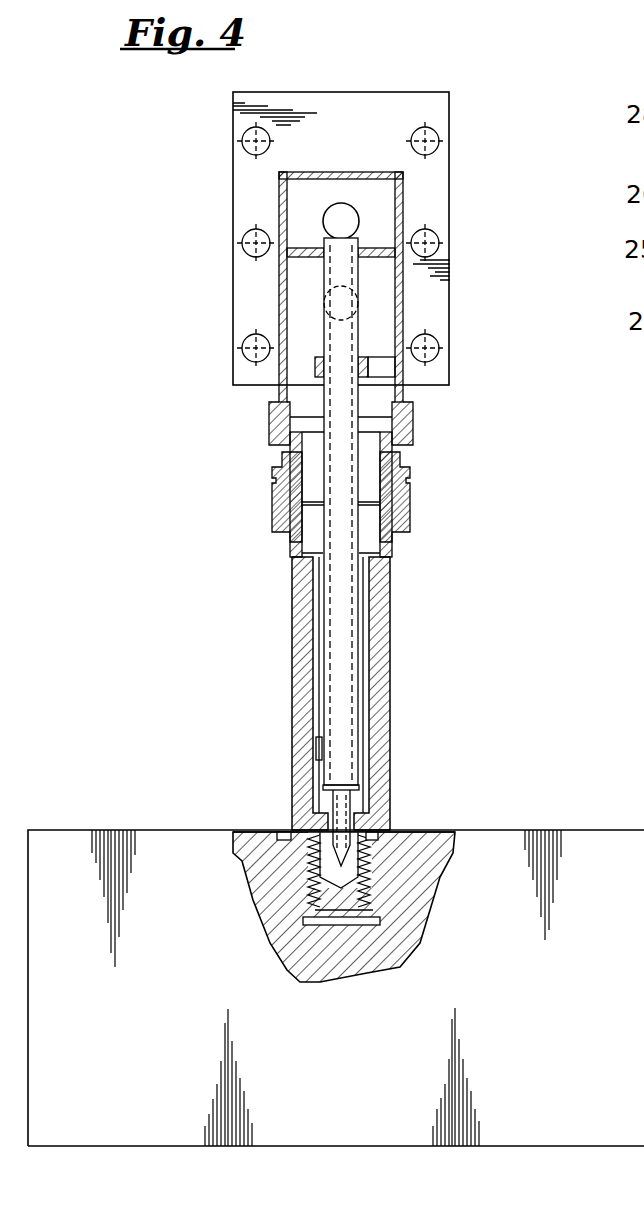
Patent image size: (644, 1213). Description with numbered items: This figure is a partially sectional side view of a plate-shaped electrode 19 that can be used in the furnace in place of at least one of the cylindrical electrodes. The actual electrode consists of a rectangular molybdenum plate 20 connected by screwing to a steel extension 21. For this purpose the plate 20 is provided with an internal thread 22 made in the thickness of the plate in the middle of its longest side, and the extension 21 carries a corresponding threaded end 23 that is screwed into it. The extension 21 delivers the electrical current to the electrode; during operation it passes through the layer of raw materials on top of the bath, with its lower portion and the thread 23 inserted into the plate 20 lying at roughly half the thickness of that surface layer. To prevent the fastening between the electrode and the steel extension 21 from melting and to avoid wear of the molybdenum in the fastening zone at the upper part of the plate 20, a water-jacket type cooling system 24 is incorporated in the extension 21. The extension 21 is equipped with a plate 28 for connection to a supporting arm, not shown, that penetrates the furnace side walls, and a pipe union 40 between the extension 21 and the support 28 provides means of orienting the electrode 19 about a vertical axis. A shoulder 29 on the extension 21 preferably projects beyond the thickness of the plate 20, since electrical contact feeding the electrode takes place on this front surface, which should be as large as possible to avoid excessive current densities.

The plate-shaped electrode 19 is at (318, 479).
The rectangular molybdenum plate 20 is at (553, 835).
The steel extension 21 is at (383, 702).
The internal thread 22 is at (310, 893).
The threaded end 23 is at (347, 905).
The cooling system 24 is at (333, 597).
The plate for connection to a supporting element 28 is at (433, 197).
The shoulder 29 is at (407, 830).
The pipe union 40 is at (412, 502).